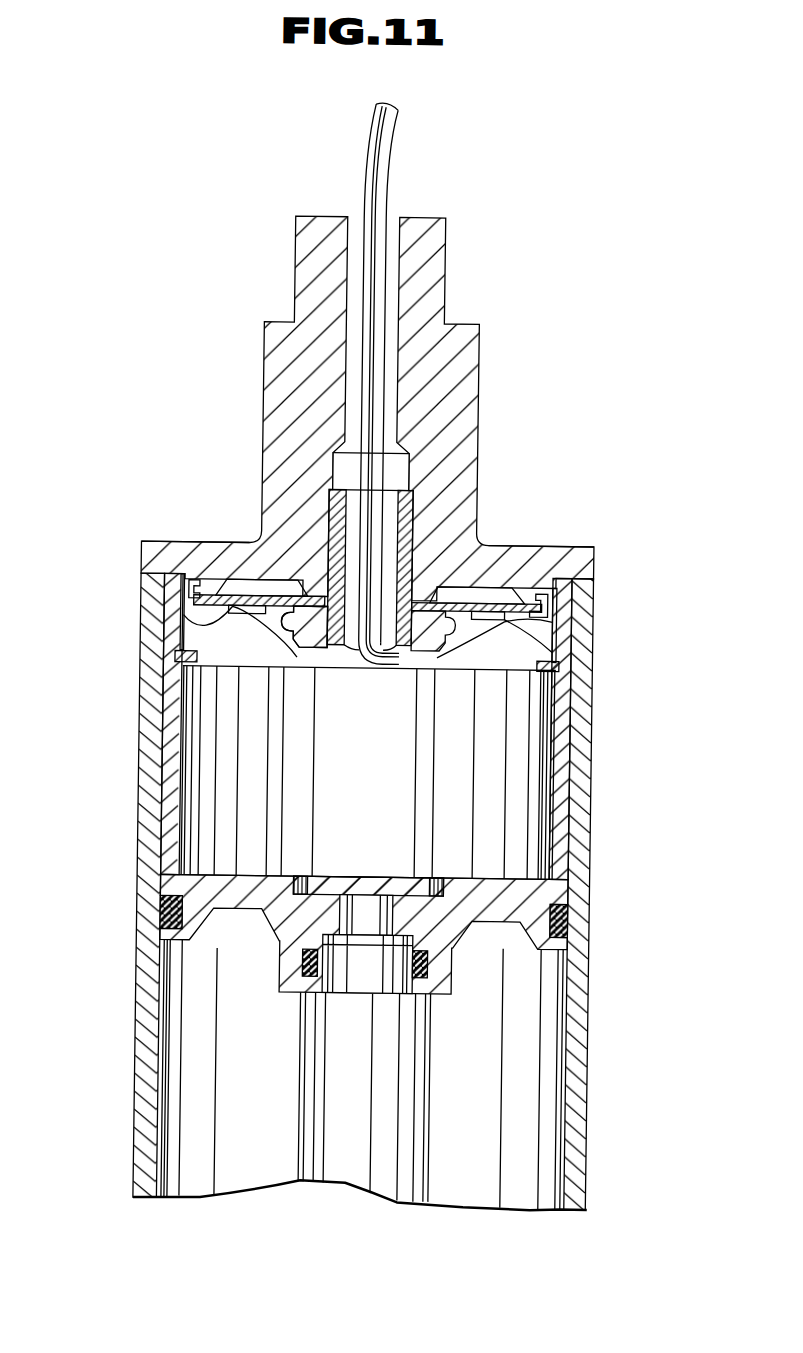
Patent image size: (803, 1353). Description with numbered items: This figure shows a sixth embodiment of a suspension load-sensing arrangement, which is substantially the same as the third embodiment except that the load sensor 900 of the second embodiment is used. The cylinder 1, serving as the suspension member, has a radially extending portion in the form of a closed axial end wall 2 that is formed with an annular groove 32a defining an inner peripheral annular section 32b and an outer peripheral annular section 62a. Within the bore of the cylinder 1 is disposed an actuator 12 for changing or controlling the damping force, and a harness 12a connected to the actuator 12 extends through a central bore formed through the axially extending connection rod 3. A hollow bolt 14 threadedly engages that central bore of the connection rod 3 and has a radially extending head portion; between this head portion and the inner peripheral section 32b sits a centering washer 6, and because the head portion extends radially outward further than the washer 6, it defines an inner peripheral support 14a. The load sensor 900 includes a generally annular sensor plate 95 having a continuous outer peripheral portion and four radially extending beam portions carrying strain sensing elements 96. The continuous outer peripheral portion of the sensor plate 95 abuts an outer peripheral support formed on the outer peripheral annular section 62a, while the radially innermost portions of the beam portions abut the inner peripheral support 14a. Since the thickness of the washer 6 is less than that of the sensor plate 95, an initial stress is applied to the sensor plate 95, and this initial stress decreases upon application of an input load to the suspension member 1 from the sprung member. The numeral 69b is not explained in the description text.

The cylinder 1 is at (601, 935).
The closed axial end wall 2 is at (212, 538).
The connection rod 3 is at (433, 291).
The centering washer 6 is at (430, 599).
The actuator 12 is at (542, 735).
The harness 12a is at (378, 176).
The hollow bolt 14 is at (409, 674).
The inner peripheral support 14a is at (296, 668).
The annular groove 32a is at (525, 580).
The inner peripheral annular section 32b is at (306, 618).
The outer peripheral annular section 62a is at (230, 594).
The diaphragm spring 69b is at (226, 625).
The sensor plate 95 is at (541, 626).
The strain sensing elements 96 is at (561, 645).
The load sensor 900 is at (533, 588).